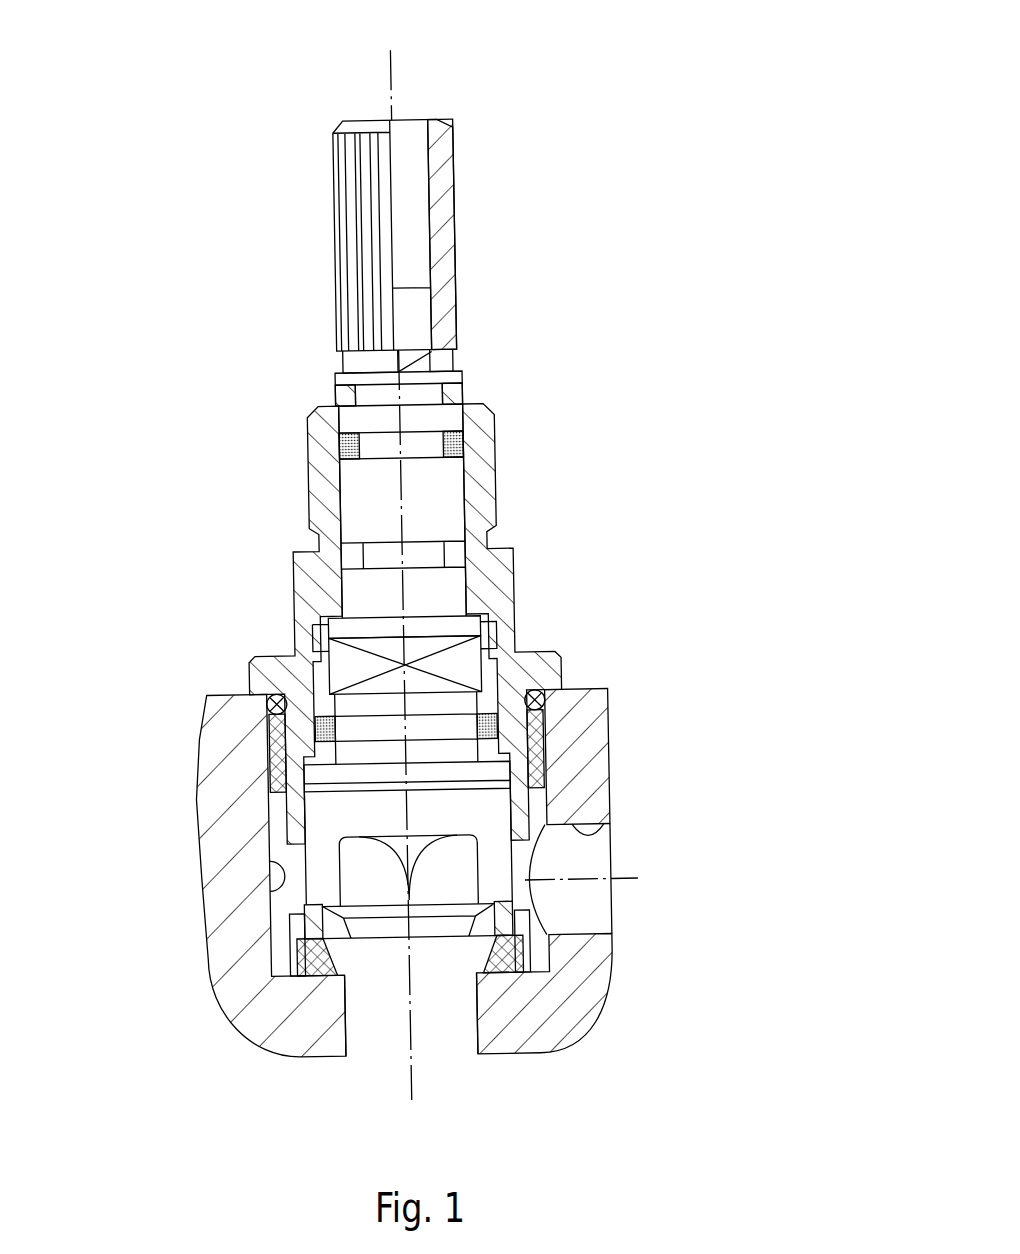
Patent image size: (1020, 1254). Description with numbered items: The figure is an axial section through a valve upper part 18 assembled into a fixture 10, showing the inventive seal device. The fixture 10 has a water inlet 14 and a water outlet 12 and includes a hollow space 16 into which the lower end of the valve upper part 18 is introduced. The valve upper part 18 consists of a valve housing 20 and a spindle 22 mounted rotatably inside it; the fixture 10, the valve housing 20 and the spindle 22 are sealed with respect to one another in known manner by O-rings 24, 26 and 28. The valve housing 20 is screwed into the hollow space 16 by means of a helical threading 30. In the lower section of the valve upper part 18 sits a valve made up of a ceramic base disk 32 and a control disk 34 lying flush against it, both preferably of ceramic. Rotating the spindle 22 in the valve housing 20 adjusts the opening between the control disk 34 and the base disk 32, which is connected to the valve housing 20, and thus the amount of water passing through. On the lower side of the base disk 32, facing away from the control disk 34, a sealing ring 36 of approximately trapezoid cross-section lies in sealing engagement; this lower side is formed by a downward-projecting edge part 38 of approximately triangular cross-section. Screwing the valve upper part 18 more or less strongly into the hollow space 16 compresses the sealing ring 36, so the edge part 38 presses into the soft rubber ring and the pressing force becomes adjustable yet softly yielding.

The fixture 10 is at (459, 603).
The water outlet 12 is at (612, 838).
The water inlet 14 is at (350, 1013).
The hollow space 16 is at (210, 962).
The valve upper part 18 is at (525, 187).
The valve housing 20 is at (497, 571).
The spindle 22 is at (440, 487).
The O-ring 24 is at (500, 712).
The O-ring 26 is at (548, 699).
The O-ring 28 is at (458, 442).
The helical threading 30 is at (535, 744).
The ceramic base disk 32 is at (550, 912).
The control disk 34 is at (493, 863).
The sealing ring 36 is at (525, 976).
The edge part 38 is at (505, 939).